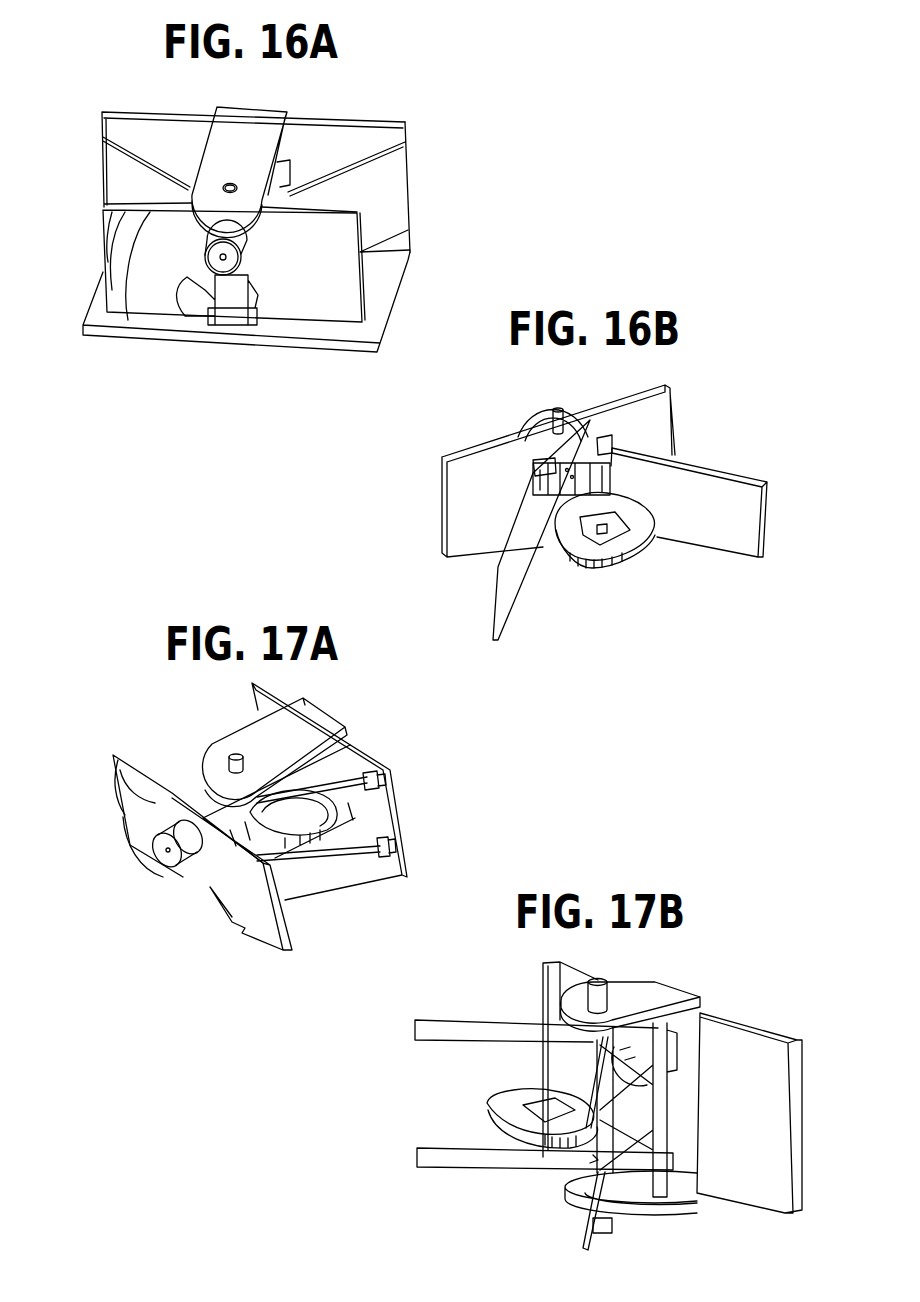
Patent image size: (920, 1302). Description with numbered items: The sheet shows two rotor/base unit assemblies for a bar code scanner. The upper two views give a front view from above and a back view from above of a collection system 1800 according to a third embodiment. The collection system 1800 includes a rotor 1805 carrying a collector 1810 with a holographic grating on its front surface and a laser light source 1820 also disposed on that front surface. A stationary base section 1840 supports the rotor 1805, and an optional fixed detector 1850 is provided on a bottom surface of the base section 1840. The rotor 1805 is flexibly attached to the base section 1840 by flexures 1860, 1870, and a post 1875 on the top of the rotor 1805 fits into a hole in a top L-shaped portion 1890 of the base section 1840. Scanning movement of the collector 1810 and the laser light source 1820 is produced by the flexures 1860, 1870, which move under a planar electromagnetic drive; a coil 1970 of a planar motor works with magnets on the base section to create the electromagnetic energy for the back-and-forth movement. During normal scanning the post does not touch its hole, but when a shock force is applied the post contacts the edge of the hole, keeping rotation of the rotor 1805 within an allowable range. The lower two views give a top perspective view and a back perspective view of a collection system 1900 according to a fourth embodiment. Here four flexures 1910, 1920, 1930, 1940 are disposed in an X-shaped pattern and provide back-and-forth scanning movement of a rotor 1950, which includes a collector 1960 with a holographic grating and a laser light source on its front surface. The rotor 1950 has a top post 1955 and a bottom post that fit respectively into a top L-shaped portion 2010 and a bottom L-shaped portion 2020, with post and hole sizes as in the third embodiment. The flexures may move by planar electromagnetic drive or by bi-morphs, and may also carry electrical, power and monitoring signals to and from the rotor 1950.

In FIG. 16A, the collection system 1800 is at (488, 223).
In FIG. 16B, the rotor 1805 is at (707, 448).
In FIG. 16A, the collector 1810 is at (340, 282).
In FIG. 16A, the laser light source 1820 is at (237, 258).
In FIG. 16A, the base section 1840 is at (355, 143).
In FIG. 16B, the base section 1840 is at (558, 471).
In FIG. 17A, the base section 1840 is at (383, 760).
In FIG. 17B, the base section 1840 is at (570, 1059).
In FIG. 16A, the fixed detector 1850 is at (230, 317).
In FIG. 16A, the flexure 1860 is at (395, 193).
In FIG. 16B, the flexure 1860 is at (515, 577).
In FIG. 16A, the flexure 1870 is at (118, 177).
In FIG. 16B, the flexure 1870 is at (727, 540).
In FIG. 16B, the post 1875 is at (560, 408).
In FIG. 16A, the top L-shaped portion 1890 is at (272, 118).
In FIG. 17A, the collection system 1900 is at (437, 800).
In FIG. 17B, the flexure 1910 is at (438, 1034).
In FIG. 17B, the flexure 1920 is at (557, 1080).
In FIG. 17B, the flexure 1930 is at (492, 1165).
In FIG. 17B, the flexure 1940 is at (582, 1238).
In FIG. 17B, the rotor 1950 is at (815, 1060).
In FIG. 17A, the top post 1955 is at (233, 753).
In FIG. 17B, the top post 1955 is at (602, 988).
In FIG. 17A, the collector 1960 is at (253, 913).
In FIG. 17B, the collector 1960 is at (742, 1048).
In FIG. 16B, the coil 1970 is at (621, 548).
In FIG. 17A, the coil 1970 is at (172, 867).
In FIG. 17B, the coil 1970 is at (498, 1108).
In FIG. 17A, the top L-shaped portion 2010 is at (304, 717).
In FIG. 17B, the top L-shaped portion 2010 is at (673, 996).
In FIG. 17A, the bottom L-shaped portion 2020 is at (308, 870).
In FIG. 17B, the bottom L-shaped portion 2020 is at (675, 1207).